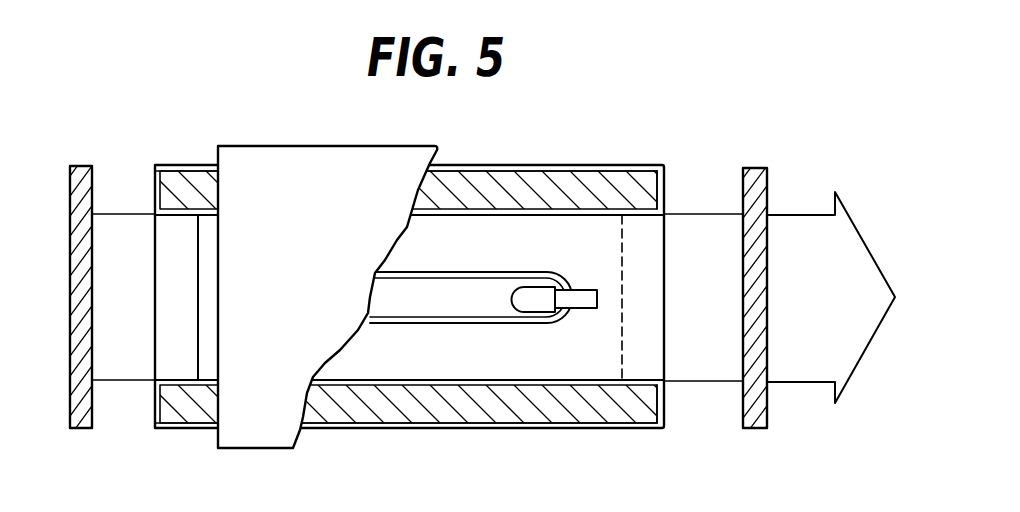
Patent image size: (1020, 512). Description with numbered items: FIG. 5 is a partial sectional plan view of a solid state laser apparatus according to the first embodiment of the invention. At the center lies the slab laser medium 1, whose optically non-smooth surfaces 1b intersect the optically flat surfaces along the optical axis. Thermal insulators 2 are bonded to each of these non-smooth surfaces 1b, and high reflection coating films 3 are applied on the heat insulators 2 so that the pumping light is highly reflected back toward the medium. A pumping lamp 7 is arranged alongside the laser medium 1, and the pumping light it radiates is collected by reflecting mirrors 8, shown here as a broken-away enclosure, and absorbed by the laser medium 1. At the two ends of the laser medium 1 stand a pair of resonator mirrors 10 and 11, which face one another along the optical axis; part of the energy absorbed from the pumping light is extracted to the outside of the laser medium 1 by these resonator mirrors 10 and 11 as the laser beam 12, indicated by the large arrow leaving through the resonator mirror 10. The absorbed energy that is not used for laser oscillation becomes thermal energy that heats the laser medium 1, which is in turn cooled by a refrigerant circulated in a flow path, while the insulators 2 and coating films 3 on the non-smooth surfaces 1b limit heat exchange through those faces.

The laser medium 1 is at (493, 368).
The optically non-smooth surfaces 1b is at (595, 205).
The thermal insulators 2 is at (642, 180).
The high reflection coating films 3 is at (550, 165).
The pumping lamp 7 is at (423, 312).
The reflecting mirrors 8 is at (344, 158).
The resonator mirror 10 is at (766, 428).
The resonator mirror 11 is at (76, 428).
The laser beam 12 is at (800, 221).